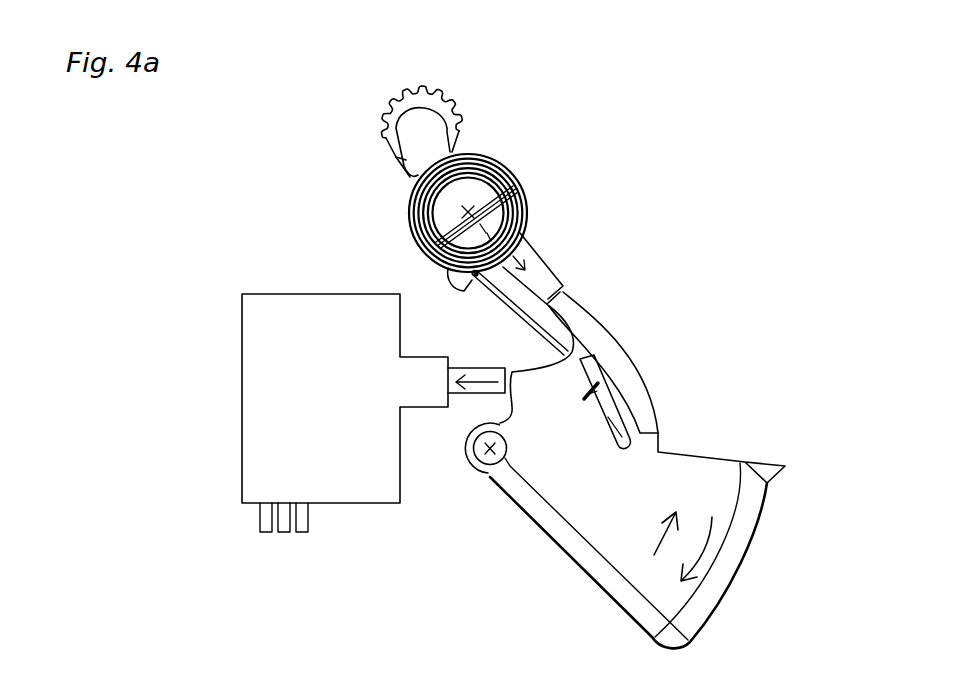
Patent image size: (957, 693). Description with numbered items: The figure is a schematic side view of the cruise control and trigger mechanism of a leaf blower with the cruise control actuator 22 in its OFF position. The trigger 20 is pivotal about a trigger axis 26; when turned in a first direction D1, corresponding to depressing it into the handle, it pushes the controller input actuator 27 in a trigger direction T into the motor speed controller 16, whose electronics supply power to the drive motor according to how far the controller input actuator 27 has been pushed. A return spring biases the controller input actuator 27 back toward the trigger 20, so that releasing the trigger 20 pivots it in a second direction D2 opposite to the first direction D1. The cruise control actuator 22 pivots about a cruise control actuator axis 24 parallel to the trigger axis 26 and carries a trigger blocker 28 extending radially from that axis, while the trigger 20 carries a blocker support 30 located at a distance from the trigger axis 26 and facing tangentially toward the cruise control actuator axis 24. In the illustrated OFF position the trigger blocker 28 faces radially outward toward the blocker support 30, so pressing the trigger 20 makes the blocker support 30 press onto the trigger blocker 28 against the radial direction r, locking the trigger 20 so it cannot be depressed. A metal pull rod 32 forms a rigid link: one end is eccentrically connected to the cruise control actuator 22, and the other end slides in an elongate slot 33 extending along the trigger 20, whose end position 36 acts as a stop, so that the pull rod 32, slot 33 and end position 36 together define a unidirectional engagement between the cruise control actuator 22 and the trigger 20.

The controller 16 is at (345, 413).
The trigger 20 is at (603, 517).
The cruise control actuator 22 is at (531, 137).
The cruise control actuator axis 24 is at (466, 212).
The trigger axis 26 is at (488, 455).
The controller input actuator 27 is at (483, 368).
The trigger blocker 28 is at (578, 290).
The blocker support 30 is at (560, 303).
The pull rod 32 is at (524, 316).
The slot 33 is at (605, 407).
The end position 36 is at (584, 359).
The trigger direction T is at (470, 383).
The radial direction r is at (469, 212).
The first direction D1 is at (672, 518).
The second direction D2 is at (705, 538).